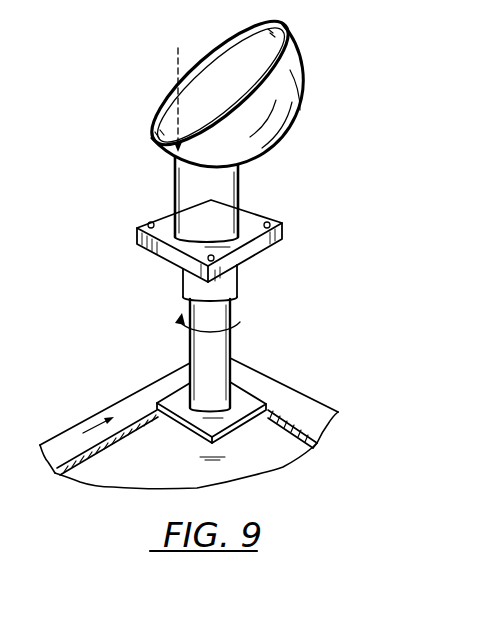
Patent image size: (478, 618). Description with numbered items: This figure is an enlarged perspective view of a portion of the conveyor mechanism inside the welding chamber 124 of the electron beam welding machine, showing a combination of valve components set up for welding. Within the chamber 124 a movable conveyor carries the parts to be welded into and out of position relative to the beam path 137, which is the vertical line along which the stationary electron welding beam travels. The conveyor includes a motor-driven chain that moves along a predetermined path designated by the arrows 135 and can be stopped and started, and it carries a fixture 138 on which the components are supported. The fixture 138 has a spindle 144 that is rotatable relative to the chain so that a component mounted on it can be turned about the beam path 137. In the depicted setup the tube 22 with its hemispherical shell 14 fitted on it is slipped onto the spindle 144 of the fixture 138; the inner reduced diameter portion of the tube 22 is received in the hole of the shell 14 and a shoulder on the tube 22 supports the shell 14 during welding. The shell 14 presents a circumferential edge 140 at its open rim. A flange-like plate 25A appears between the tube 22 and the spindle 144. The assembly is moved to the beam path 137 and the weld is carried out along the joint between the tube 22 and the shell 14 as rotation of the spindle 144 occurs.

The shell 14 is at (246, 85).
The tube 22 is at (241, 194).
The square mounting flange plate 25A is at (257, 255).
The welding chamber 124 is at (123, 318).
The arrows designating conveyor path 135 is at (290, 425).
The beam path 137 is at (178, 62).
The fixture 138 is at (229, 374).
The circumferential edge 140 is at (257, 25).
The spindle 144 is at (223, 313).